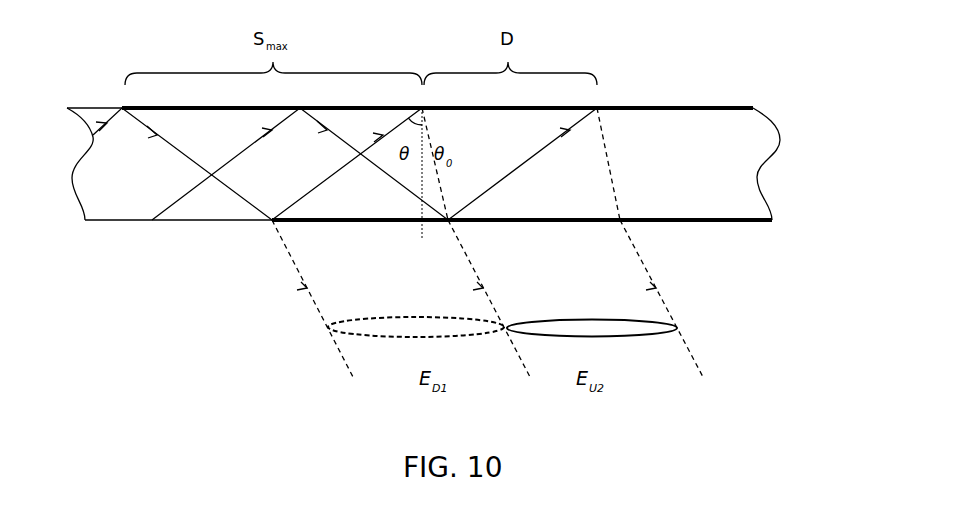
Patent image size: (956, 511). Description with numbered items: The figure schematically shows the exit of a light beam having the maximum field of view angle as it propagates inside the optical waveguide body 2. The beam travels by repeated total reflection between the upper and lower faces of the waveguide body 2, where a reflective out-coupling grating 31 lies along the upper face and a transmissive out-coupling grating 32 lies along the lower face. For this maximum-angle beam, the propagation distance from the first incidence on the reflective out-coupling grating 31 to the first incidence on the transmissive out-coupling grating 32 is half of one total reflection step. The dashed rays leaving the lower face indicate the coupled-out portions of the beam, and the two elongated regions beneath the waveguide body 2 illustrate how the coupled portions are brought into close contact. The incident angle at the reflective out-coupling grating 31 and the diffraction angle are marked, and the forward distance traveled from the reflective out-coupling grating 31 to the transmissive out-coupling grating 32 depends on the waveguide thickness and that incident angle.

The optical waveguide body 2 is at (757, 133).
The reflective out-coupling grating 31 is at (703, 102).
The transmissive out-coupling grating 32 is at (735, 230).